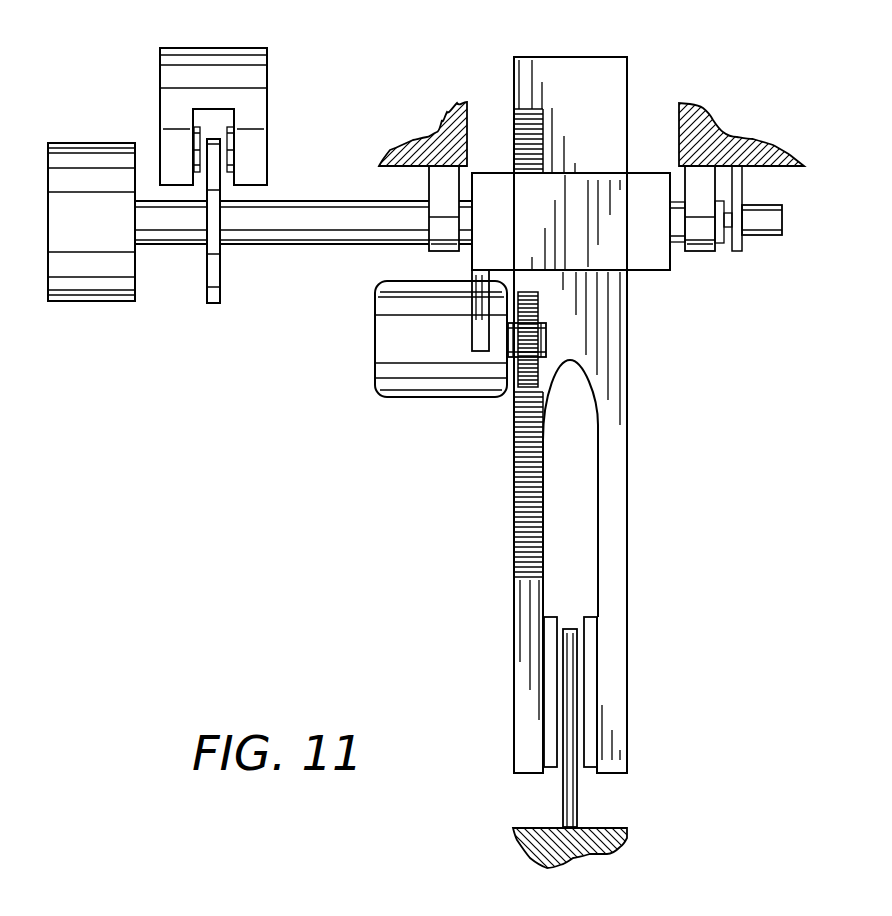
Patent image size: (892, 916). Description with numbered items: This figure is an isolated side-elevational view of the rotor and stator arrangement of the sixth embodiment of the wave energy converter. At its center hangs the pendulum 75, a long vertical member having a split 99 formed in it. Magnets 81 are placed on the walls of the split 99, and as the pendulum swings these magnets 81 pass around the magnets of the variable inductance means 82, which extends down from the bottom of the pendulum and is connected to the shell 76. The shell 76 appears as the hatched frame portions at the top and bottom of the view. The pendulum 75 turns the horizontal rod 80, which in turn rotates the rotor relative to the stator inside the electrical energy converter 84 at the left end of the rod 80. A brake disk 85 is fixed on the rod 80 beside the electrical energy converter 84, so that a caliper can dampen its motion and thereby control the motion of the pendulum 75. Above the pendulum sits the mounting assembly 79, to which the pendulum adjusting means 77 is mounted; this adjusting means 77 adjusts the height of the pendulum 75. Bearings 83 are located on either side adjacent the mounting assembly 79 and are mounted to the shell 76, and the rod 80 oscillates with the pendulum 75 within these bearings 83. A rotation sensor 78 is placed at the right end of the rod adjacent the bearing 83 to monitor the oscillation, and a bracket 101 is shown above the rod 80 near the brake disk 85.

The pendulum 75 is at (628, 470).
The shell 76 is at (466, 101).
The pendulum adjusting means 77 is at (400, 397).
The rotation sensor 78 is at (770, 208).
The mounting assembly 79 is at (650, 270).
The rod 80 is at (330, 245).
The magnets 81 is at (548, 614).
The variable inductance means 82 is at (577, 812).
The bearings 83 is at (440, 245).
The electrical energy converter 84 is at (80, 302).
The brake disk 85 is at (210, 290).
The split 99 is at (590, 538).
The bracket 101 is at (250, 48).